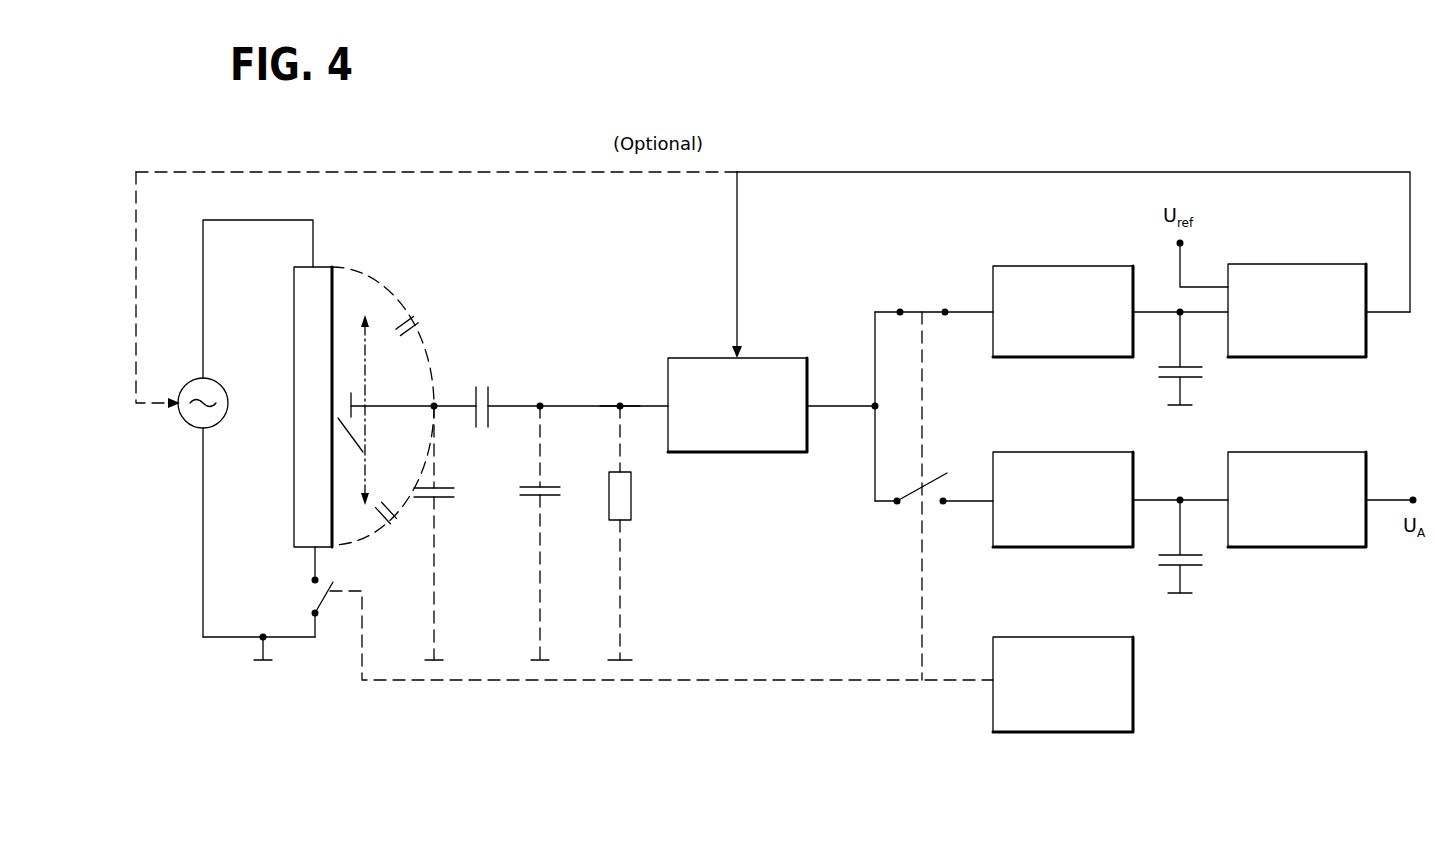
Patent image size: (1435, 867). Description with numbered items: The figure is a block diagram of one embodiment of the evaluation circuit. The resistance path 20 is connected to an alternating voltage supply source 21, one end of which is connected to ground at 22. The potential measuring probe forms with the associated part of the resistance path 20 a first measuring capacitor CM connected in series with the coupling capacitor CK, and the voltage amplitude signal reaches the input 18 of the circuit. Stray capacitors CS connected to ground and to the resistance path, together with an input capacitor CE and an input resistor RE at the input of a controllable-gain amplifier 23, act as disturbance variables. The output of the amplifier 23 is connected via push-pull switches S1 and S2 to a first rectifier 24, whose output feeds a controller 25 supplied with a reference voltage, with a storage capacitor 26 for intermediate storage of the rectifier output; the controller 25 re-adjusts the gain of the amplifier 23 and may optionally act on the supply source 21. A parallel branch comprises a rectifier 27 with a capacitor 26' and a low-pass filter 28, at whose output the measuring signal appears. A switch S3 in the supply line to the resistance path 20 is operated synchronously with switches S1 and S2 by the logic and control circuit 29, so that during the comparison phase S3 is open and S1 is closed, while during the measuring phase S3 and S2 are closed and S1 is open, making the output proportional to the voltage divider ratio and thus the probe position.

The input 18 is at (620, 398).
The resistance path 20 is at (333, 262).
The alternating voltage supply source 21 is at (212, 380).
The ground 22 is at (215, 645).
The controllable-gain amplifier 23 is at (737, 454).
The first rectifier 24 is at (1062, 265).
The controller 25 is at (1302, 263).
The storage capacitor 26 is at (1208, 358).
The storage capacitor 26' is at (1213, 546).
The rectifier 27 is at (1062, 452).
The low-pass filter 28 is at (1305, 452).
The logic and control circuit 29 is at (1058, 636).
The switch S1 is at (911, 306).
The switch S2 is at (908, 507).
The switch S3 is at (327, 605).
The stray capacitor CS is at (421, 312).
The coupling capacitor CK is at (481, 388).
The input capacitor CE is at (555, 533).
The input resistor RE is at (637, 533).
The first measuring capacitor CM is at (370, 431).